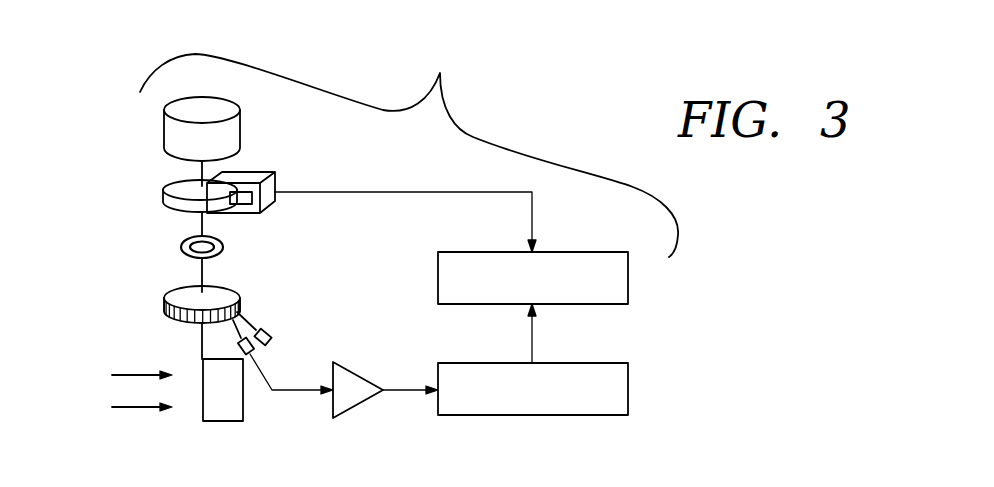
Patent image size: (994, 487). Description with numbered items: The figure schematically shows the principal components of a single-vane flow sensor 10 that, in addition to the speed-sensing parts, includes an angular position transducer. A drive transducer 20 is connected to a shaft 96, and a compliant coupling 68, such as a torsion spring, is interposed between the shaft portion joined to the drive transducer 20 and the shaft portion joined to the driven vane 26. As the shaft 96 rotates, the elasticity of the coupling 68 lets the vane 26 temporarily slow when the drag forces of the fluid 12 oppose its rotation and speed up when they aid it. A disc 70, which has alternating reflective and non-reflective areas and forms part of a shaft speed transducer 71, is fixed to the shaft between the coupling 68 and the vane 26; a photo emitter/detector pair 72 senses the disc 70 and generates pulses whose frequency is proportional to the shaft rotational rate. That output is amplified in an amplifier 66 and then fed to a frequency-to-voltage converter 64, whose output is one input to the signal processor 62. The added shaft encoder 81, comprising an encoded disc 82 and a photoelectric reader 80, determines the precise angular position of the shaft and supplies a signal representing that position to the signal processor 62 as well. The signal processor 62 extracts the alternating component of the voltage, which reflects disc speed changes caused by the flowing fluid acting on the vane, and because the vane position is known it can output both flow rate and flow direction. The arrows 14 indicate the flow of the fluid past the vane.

The sensor 10 is at (409, 148).
The drive transducer 20 is at (164, 128).
The shaft 96 is at (232, 172).
The shaft encoder 81 is at (126, 219).
The encoded disc 82 is at (174, 205).
The photoelectric reader 80 is at (262, 214).
The compliant coupling 68 is at (181, 244).
The disc 70 is at (166, 308).
The shaft speed transducer 71 is at (294, 301).
The photo emitter/detector pair 72 is at (303, 343).
The fluid flow 14 is at (121, 407).
The fluid 12 is at (188, 457).
The driven vane 26 is at (232, 421).
The amplifier 66 is at (369, 377).
The signal processor 62 is at (573, 252).
The frequency-to-voltage converter 64 is at (588, 415).